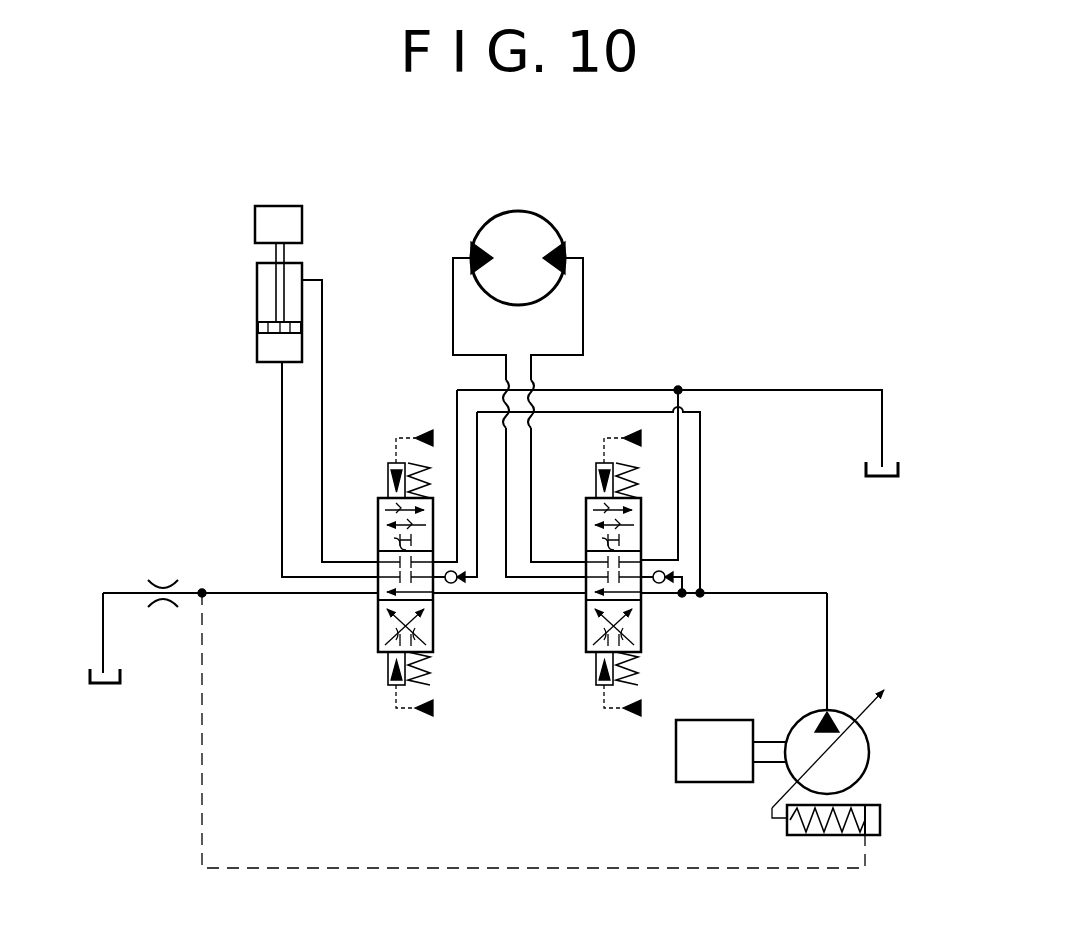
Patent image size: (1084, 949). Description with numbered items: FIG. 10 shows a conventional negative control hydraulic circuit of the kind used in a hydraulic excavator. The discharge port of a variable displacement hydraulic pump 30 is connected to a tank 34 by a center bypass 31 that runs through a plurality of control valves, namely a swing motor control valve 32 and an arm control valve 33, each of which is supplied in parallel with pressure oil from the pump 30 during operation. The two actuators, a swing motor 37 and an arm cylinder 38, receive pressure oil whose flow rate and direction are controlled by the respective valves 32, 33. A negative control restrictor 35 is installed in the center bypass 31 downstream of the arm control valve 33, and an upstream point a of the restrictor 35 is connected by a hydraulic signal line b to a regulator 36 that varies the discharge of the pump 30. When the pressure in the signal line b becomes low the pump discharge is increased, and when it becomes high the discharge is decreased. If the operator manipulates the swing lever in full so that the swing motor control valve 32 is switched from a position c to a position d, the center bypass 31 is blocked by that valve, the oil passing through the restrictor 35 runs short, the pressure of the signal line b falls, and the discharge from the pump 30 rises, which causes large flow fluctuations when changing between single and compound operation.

The variable displacement hydraulic pump 30 is at (868, 745).
The center bypass 31 is at (518, 600).
The swing motor control valve 32 is at (642, 622).
The arm control valve 33 is at (434, 622).
The tank 34 is at (118, 684).
The negative control restrictor 35 is at (160, 580).
The regulator 36 is at (880, 822).
The swing motor 37 is at (555, 228).
The arm cylinder 38 is at (314, 243).
The upstream point a is at (211, 604).
The hydraulic signal line b is at (556, 872).
The position c is at (581, 598).
The position d is at (586, 525).